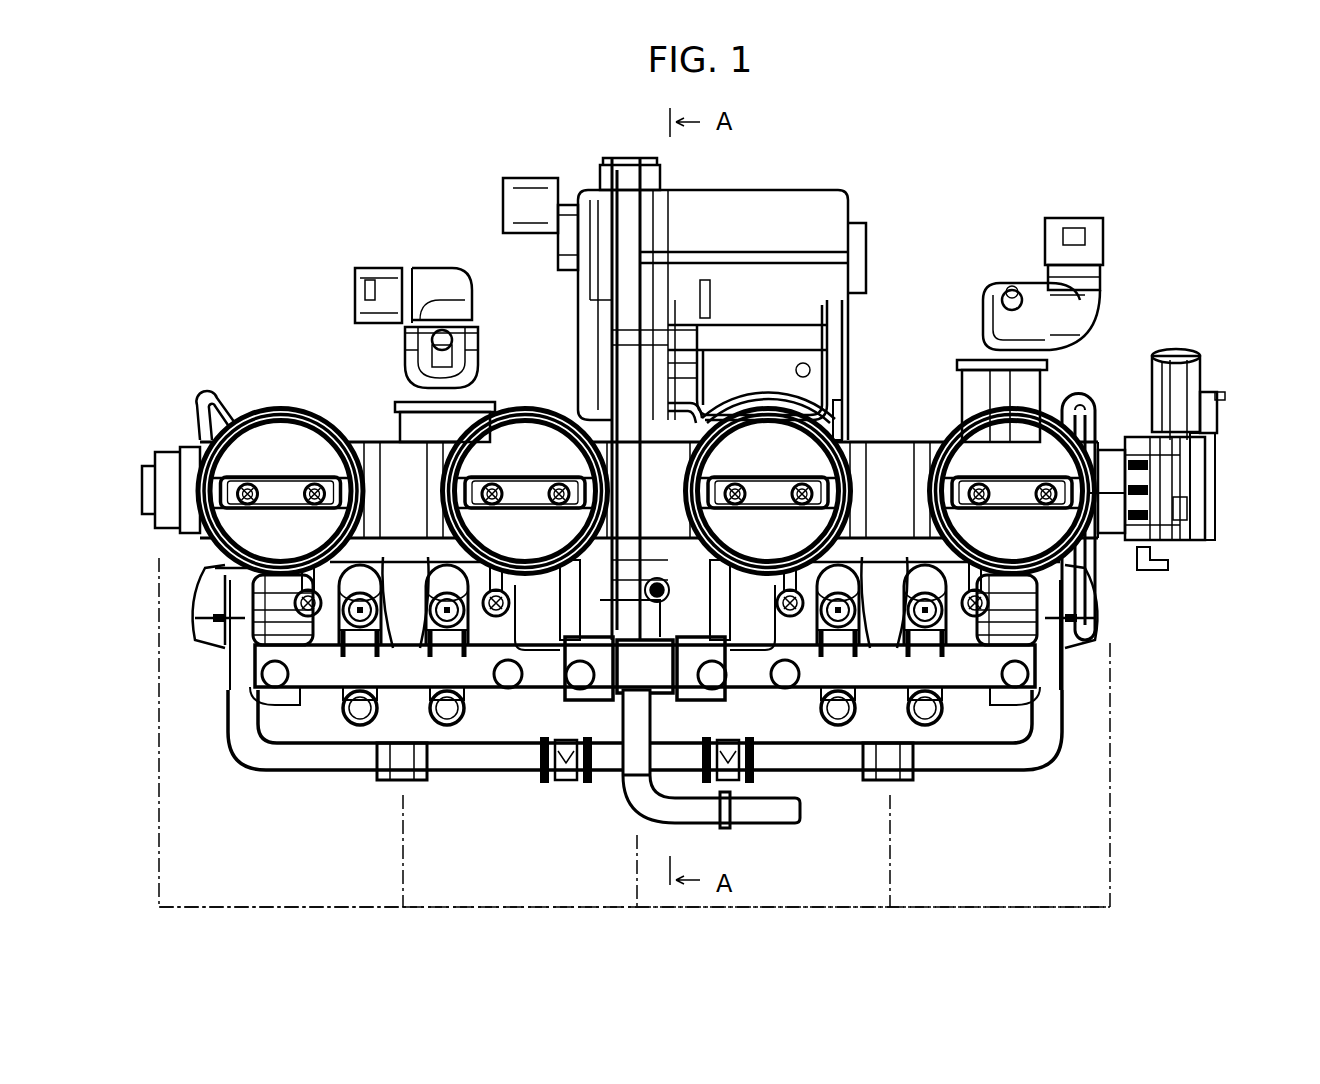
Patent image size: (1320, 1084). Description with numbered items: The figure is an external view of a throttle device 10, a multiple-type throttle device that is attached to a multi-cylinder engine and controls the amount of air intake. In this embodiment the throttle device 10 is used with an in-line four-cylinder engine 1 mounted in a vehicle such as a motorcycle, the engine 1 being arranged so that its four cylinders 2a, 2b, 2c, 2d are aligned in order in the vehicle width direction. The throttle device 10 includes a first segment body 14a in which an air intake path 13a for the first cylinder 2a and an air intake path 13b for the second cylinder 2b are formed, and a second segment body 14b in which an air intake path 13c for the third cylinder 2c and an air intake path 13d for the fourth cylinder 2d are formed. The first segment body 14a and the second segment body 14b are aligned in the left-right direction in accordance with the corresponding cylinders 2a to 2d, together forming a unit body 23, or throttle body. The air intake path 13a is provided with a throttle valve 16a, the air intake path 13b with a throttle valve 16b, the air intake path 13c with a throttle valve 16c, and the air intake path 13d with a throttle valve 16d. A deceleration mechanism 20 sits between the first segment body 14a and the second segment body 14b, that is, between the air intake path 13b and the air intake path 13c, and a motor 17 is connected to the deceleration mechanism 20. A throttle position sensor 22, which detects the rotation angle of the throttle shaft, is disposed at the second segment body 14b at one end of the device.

The engine 1 is at (1128, 743).
The #1 cylinder 2a is at (280, 853).
The #2 cylinder 2b is at (517, 853).
The #3 cylinder 2c is at (757, 853).
The #4 cylinder 2d is at (995, 853).
The throttle device 10 is at (1168, 178).
The air intake path 13a is at (262, 411).
The air intake path 13b is at (516, 410).
The air intake path 13c is at (838, 425).
The air intake path 13d is at (1046, 428).
The first segment body 14a is at (378, 440).
The second segment body 14b is at (895, 440).
The throttle valve 16a is at (298, 455).
The throttle valve 16b is at (537, 455).
The throttle valve 16c is at (802, 457).
The throttle valve 16d is at (1045, 460).
The motor 17 is at (775, 190).
The deceleration mechanism 20 is at (622, 160).
The throttle position sensor 22 is at (1200, 377).
The unit body 23 is at (931, 425).